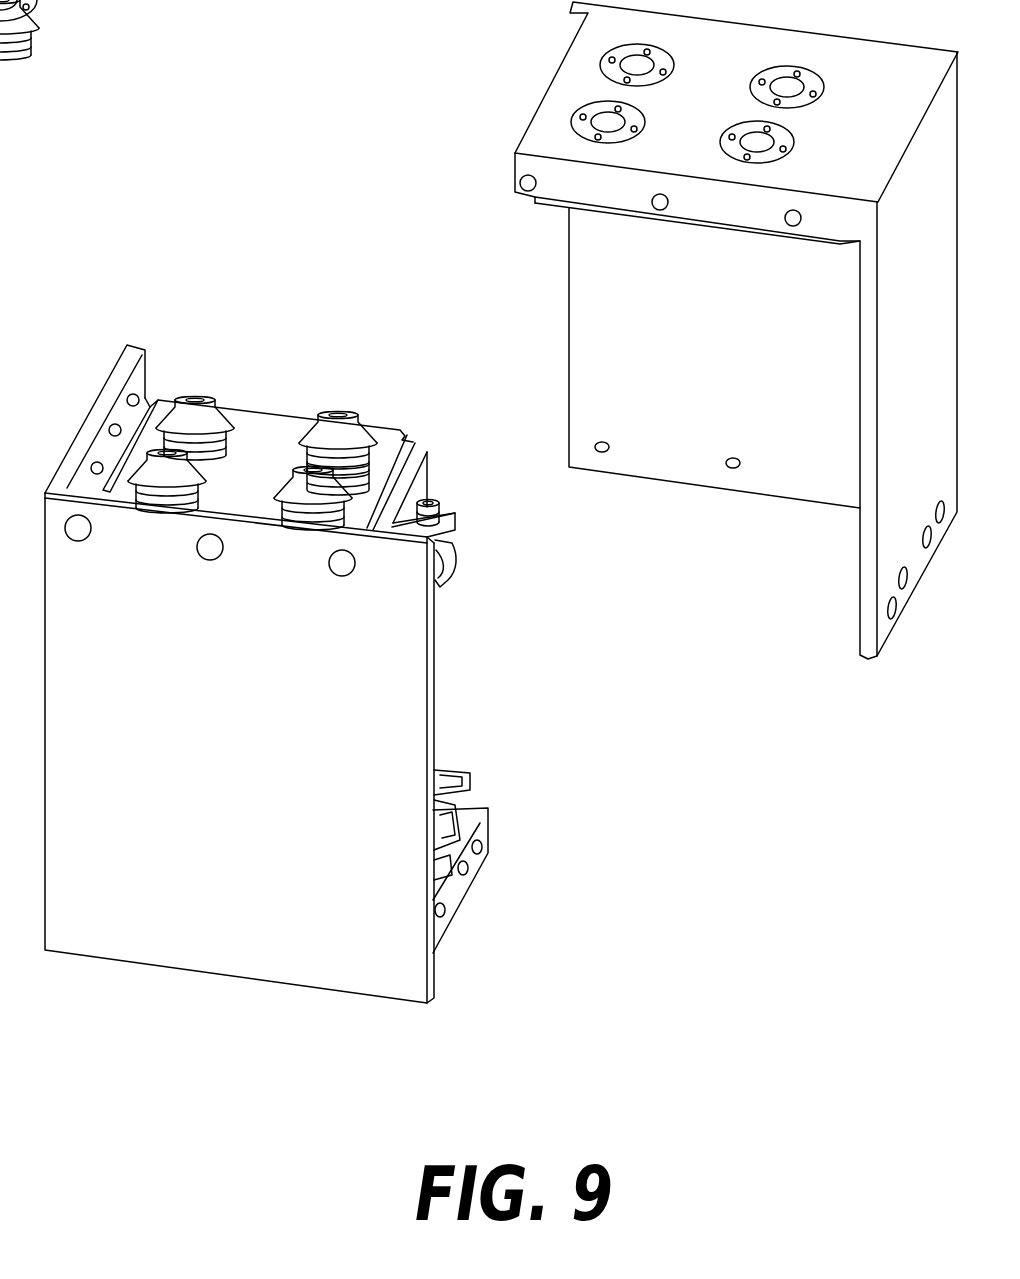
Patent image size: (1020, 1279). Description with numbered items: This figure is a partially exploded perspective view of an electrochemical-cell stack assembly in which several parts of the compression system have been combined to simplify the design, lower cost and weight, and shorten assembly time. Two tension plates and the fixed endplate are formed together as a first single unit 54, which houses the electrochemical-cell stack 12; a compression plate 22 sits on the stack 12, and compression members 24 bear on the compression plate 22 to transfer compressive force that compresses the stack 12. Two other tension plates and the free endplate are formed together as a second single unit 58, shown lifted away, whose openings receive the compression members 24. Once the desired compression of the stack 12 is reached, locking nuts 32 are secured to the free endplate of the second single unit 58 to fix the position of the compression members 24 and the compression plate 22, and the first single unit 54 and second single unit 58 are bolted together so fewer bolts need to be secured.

The electrochemical-cell stack 12 is at (427, 453).
The compression plate 22 is at (382, 477).
The compression members 24 is at (218, 390).
The locking nuts 32 is at (680, 60).
The first single unit 54 is at (390, 967).
The second single unit 58 is at (890, 552).